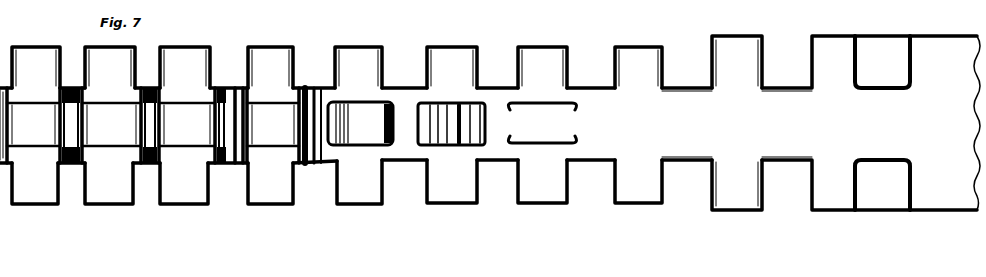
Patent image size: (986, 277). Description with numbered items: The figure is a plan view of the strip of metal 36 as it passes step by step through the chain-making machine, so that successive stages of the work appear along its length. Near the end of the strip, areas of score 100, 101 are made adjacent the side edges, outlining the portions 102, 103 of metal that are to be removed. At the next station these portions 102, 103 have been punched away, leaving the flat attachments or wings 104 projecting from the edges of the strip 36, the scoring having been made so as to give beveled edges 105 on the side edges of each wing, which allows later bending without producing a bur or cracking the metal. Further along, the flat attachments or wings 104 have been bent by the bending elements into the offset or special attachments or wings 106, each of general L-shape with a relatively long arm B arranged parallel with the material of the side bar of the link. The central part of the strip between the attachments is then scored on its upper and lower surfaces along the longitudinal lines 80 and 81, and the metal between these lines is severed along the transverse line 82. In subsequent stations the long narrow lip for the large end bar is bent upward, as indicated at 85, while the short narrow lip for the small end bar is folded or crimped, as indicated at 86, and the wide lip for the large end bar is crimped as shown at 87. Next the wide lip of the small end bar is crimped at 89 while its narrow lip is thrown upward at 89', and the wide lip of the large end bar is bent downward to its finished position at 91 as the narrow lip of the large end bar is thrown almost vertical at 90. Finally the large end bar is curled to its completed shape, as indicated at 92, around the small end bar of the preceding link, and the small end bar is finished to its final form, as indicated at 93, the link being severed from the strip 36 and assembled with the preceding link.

The strip of metal 36 is at (960, 46).
The line of longitudinal score 80 is at (560, 100).
The line of longitudinal score 81 is at (570, 143).
The transverse line 82 is at (478, 100).
The upwardly bent long narrow lip 85 is at (355, 115).
The folded short narrow lip 86 is at (380, 100).
The crimped wide lip of large end bar 87 is at (325, 165).
The crimped wide lip of small end bar 89 is at (306, 141).
The upwardly thrown narrow lip of small end bar 89' is at (317, 114).
The narrow lip of large end bar in near-vertical position 90 is at (256, 127).
The downwardly bent wide lip of large end bar 91 is at (236, 88).
The completed large end bar 92 is at (160, 126).
The completed small end bar 93 is at (221, 130).
The area of score 100 is at (920, 48).
The area of score 101 is at (920, 200).
The portion of metal to be removed 102 is at (882, 62).
The portion of metal to be removed 103 is at (882, 185).
The flat attachment or wing 104 is at (734, 43).
The beveled edge 105 is at (712, 63).
The offset or special attachment or wing 106 is at (335, 197).
The relatively long arm B is at (272, 52).